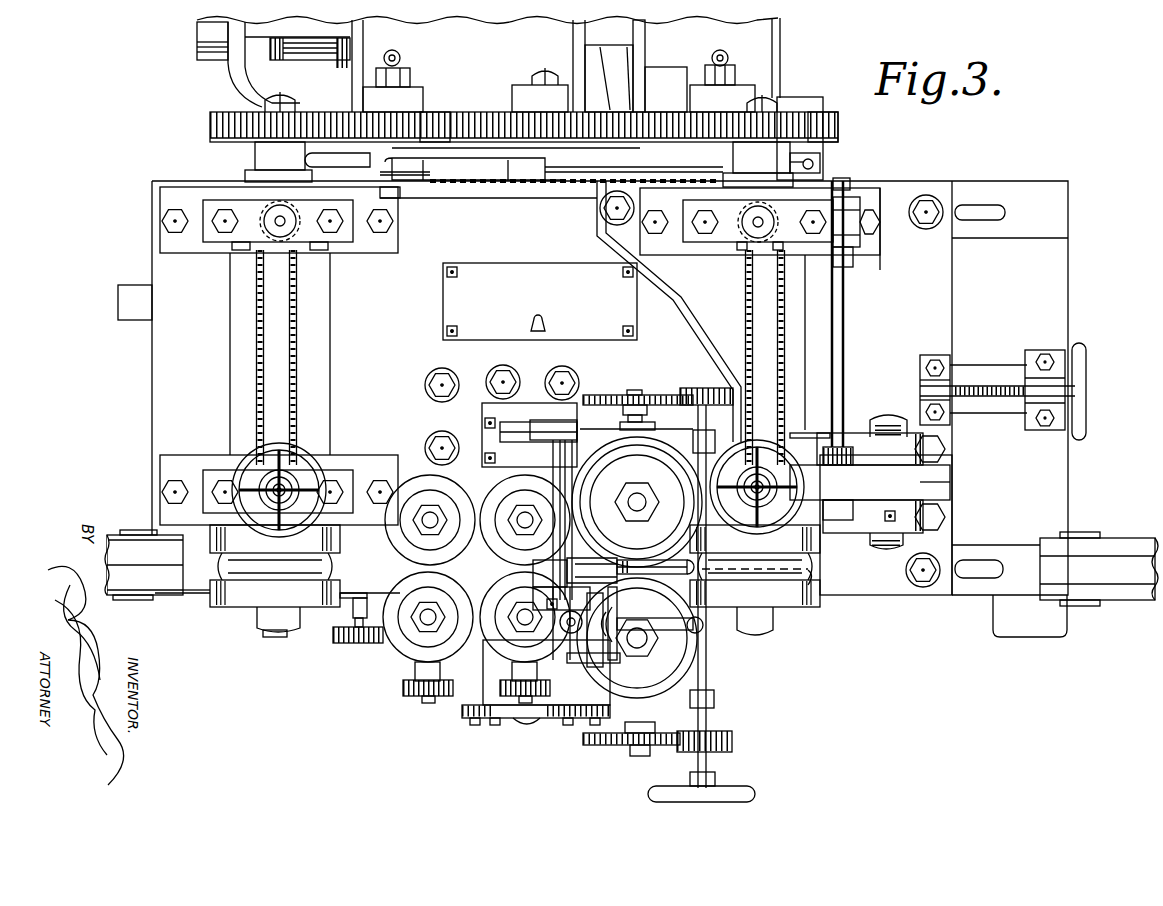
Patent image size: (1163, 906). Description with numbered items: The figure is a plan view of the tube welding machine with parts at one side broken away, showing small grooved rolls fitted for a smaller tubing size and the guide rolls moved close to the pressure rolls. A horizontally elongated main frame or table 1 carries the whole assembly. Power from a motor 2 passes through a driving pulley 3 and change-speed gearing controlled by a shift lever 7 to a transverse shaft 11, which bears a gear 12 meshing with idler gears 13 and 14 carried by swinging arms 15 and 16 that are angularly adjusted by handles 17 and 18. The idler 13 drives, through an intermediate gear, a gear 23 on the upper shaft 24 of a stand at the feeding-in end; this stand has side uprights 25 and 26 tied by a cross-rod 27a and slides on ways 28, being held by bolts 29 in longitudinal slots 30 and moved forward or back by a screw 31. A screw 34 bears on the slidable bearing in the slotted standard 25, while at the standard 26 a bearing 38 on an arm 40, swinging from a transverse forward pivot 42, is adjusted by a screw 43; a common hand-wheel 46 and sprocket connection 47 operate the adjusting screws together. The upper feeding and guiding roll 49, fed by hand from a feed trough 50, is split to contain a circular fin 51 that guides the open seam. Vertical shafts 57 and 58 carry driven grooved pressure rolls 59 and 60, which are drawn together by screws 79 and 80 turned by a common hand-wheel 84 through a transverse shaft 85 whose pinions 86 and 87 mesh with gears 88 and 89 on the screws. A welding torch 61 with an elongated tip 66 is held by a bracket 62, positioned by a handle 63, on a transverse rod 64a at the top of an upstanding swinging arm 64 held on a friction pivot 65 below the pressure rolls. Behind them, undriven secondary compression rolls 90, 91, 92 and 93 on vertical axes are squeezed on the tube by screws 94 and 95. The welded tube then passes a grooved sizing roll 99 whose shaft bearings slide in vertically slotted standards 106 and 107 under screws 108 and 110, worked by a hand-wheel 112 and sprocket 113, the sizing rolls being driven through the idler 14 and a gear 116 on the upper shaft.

The main frame 1 is at (593, 388).
The motor 2 is at (487, 65).
The driving pulley 3 is at (780, 35).
The shift lever 7 is at (348, 628).
The transverse shaft 11 is at (550, 72).
The gear 12 is at (522, 108).
The idler gear 13 is at (656, 112).
The idler gear 14 is at (436, 112).
The swinging arm 15 is at (660, 172).
The swinging arm 16 is at (462, 153).
The handle 17 is at (814, 163).
The handle 18 is at (318, 165).
The gear 23 is at (838, 125).
The upper shaft 24 is at (775, 105).
The side upright 25 is at (697, 243).
The side upright 26 is at (950, 483).
The cross-rod 27a is at (845, 330).
The ways 28 is at (1032, 240).
The bolts 29 is at (922, 230).
The longitudinal slots 30 is at (975, 207).
The screw 31 is at (1087, 410).
The screw 34 is at (770, 228).
The bearing 38 is at (777, 445).
The arm 40 is at (856, 433).
The transverse forward pivot 42 is at (889, 414).
The screw 43 is at (800, 485).
The hand-wheel 46 is at (820, 545).
The sprocket connection 47 is at (784, 345).
The upper feeding and guiding roll 49 is at (792, 612).
The feed trough 50 is at (1103, 602).
The circular fin 51 is at (822, 585).
The vertical shaft 57 is at (637, 646).
The vertical shaft 58 is at (637, 492).
The pressure roll 59 is at (690, 655).
The pressure roll 60 is at (613, 457).
The welding torch 61 is at (592, 560).
The bracket 62 is at (580, 667).
The handle 63 is at (702, 630).
The upstanding swinging arm 64 is at (482, 430).
The transverse rod 64a is at (550, 540).
The friction pivot 65 is at (565, 372).
The tip 66 is at (680, 560).
The screw 79 is at (645, 752).
The screw 80 is at (650, 412).
The hand-wheel 84 is at (756, 794).
The transverse shaft 85 is at (708, 690).
The pinion 86 is at (732, 741).
The pinion 87 is at (702, 388).
The gear 88 is at (598, 745).
The gear 89 is at (622, 395).
The secondary compression roll 90 is at (508, 650).
The secondary compression roll 91 is at (520, 480).
The secondary compression roll 92 is at (400, 642).
The secondary compression roll 93 is at (425, 478).
The screw 94 is at (520, 700).
The screw 95 is at (410, 697).
The sizing roll 99 is at (235, 608).
The vertically slotted standard 106 is at (220, 242).
The vertically slotted standard 107 is at (213, 475).
The screw 108 is at (285, 470).
The screw 110 is at (285, 225).
The hand-wheel 112 is at (300, 470).
The sprocket 113 is at (300, 360).
The gear 116 is at (210, 125).